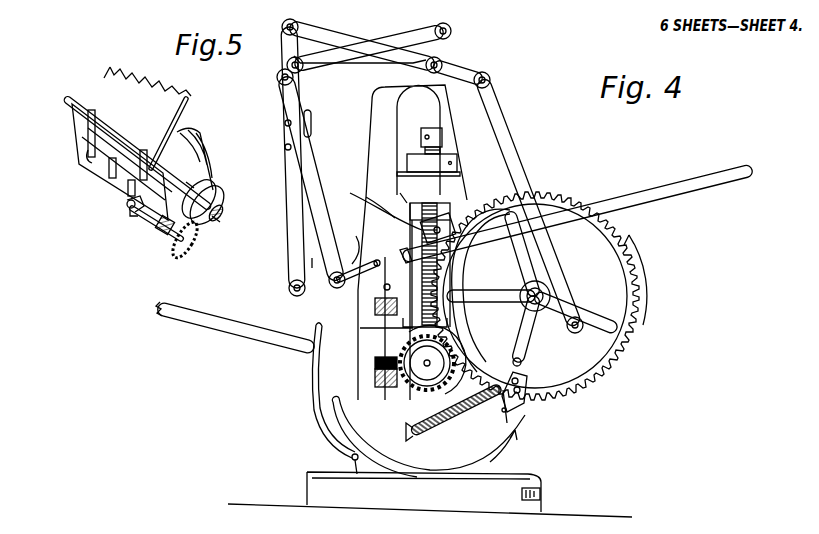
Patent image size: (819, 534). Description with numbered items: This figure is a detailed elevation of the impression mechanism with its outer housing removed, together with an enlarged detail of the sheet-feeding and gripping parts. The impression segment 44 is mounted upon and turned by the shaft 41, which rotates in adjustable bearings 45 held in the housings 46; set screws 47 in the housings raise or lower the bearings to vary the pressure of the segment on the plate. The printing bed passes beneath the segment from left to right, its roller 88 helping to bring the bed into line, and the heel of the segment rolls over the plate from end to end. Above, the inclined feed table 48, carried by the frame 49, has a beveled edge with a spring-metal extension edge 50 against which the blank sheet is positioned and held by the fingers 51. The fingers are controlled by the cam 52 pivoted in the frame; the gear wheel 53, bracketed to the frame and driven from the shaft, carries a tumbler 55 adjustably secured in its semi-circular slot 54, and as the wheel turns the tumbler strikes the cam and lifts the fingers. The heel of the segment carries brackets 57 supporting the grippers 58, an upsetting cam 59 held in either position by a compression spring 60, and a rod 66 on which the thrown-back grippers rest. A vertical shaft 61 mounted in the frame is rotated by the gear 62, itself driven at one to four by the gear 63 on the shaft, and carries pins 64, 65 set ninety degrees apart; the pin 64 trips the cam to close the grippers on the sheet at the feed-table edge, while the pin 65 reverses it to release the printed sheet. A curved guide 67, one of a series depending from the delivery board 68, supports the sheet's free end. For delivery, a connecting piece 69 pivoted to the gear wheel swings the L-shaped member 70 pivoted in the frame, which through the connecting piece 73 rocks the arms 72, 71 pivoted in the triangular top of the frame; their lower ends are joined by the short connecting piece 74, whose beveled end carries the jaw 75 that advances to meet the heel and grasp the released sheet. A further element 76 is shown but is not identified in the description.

In FIG. 4, the shaft 41 is at (425, 361).
In FIG. 5, the shaft 41 is at (223, 214).
In FIG. 4, the impression segment 44 is at (342, 426).
In FIG. 5, the impression segment 44 is at (195, 156).
In FIG. 4, the adjustable bearings 45 is at (408, 332).
In FIG. 4, the housings 46 is at (428, 175).
In FIG. 4, the set screws 47 is at (428, 128).
In FIG. 4, the inclined feed table 48 is at (692, 190).
In FIG. 5, the inclined feed table 48 is at (106, 78).
In FIG. 4, the frame 49 is at (372, 157).
In FIG. 4, the extension edge of spring metal 50 is at (437, 267).
In FIG. 5, the fingers 51 is at (85, 132).
In FIG. 4, the cam 52 is at (383, 200).
In FIG. 5, the cam 52 is at (68, 97).
In FIG. 4, the gear wheel 53 is at (560, 197).
In FIG. 4, the semi-circular slot 54 is at (478, 355).
In FIG. 4, the tumbler 55 is at (457, 313).
In FIG. 4, the brackets 57 is at (403, 247).
In FIG. 5, the grippers 58 is at (83, 158).
In FIG. 4, the upsetting cam 59 is at (525, 395).
In FIG. 5, the upsetting cam 59 is at (127, 208).
In FIG. 4, the compression spring 60 is at (505, 452).
In FIG. 4, the vertical shaft 61 is at (416, 276).
In FIG. 5, the vertical shaft 61 is at (161, 247).
In FIG. 4, the gear 62 is at (375, 366).
In FIG. 5, the gear 62 is at (195, 250).
In FIG. 4, the gear 63 is at (412, 388).
In FIG. 5, the gear 63 is at (220, 188).
In FIG. 4, the pin 64 is at (375, 266).
In FIG. 5, the pin 64 is at (130, 216).
In FIG. 4, the pin 65 is at (385, 289).
In FIG. 5, the pin 65 is at (142, 230).
In FIG. 4, the rod 66 is at (522, 361).
In FIG. 4, the curved guide 67 is at (313, 383).
In FIG. 4, the delivery board 68 is at (222, 328).
In FIG. 4, the connecting piece 69 is at (513, 150).
In FIG. 4, the L-shaped member 70 is at (493, 82).
In FIG. 4, the arm 71 is at (283, 98).
In FIG. 4, the arm 72 is at (318, 142).
In FIG. 4, the connecting piece 73 is at (402, 30).
In FIG. 4, the short connecting piece 74 is at (312, 256).
In FIG. 4, the jaw 75 is at (357, 253).
In FIG. 4, the base 76 is at (315, 490).
In FIG. 4, the roller 88 is at (541, 496).